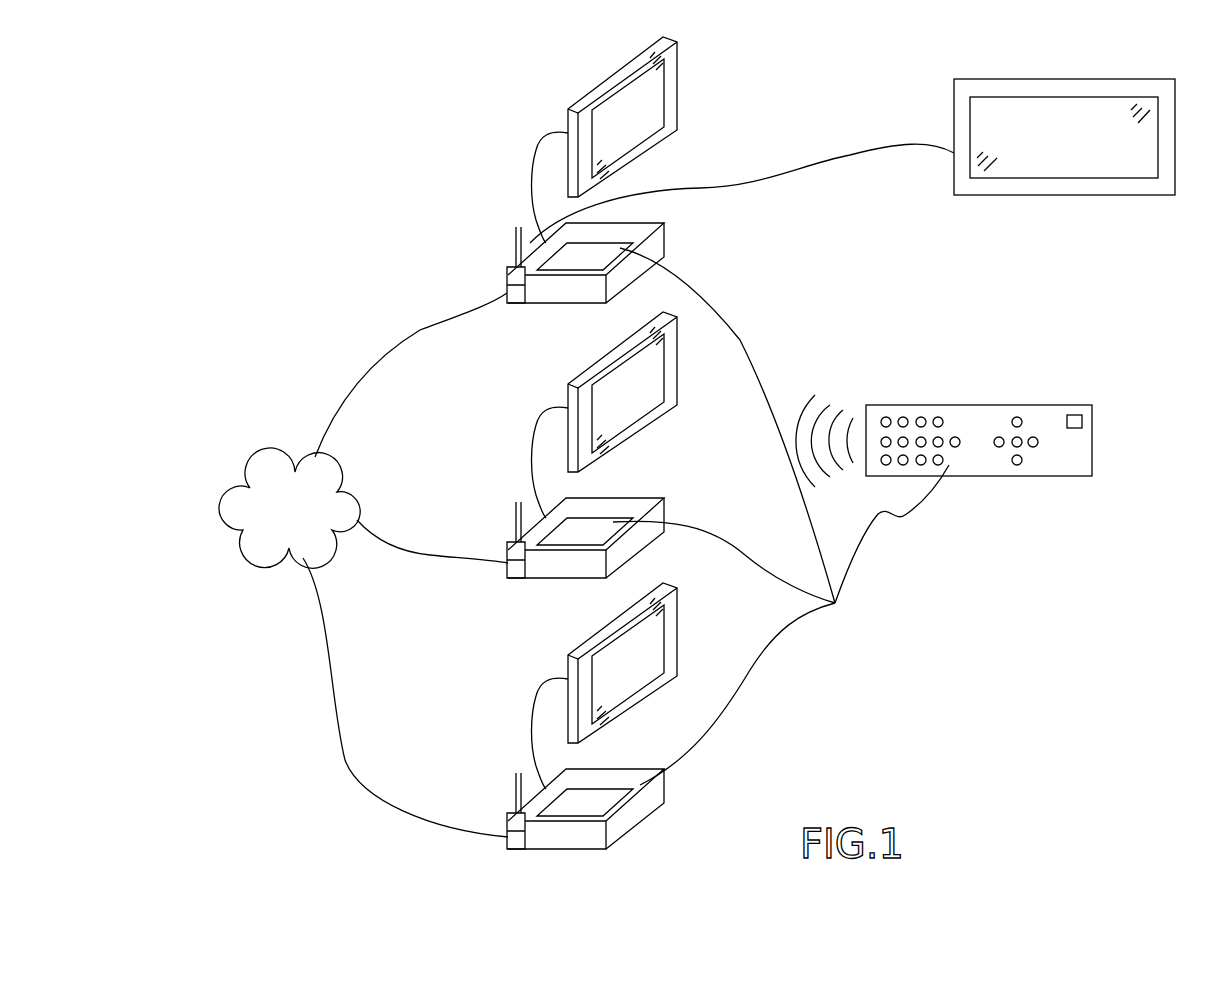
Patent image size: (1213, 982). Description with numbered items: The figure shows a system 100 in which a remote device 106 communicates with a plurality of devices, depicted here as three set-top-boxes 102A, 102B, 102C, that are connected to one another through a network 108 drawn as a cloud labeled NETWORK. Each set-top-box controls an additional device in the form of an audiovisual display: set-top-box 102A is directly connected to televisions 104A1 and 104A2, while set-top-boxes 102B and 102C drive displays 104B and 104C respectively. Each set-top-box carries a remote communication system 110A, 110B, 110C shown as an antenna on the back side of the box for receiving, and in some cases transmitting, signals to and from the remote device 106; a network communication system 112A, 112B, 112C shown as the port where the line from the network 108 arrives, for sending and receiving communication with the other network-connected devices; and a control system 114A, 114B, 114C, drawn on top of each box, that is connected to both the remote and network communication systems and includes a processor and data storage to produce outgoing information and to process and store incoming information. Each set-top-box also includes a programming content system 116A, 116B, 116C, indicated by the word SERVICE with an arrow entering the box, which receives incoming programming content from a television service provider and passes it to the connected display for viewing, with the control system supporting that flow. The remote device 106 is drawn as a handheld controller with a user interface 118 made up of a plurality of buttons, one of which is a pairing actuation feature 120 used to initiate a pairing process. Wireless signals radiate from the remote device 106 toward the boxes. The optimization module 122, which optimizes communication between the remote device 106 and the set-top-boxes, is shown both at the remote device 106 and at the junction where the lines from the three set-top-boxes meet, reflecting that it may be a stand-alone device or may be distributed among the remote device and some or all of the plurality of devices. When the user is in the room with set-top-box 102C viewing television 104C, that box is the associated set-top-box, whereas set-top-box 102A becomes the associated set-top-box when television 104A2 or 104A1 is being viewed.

The system 100 is at (1100, 730).
The set-top-box 102A is at (623, 283).
The set-top-box 102B is at (623, 558).
The set-top-box 102C is at (623, 829).
The television 104A1 is at (657, 135).
The television 104A2 is at (1083, 195).
The display device 104B is at (657, 410).
The television 104C is at (657, 681).
The remote device 106 is at (970, 491).
The network 108 is at (242, 481).
The remote communication system 110A is at (518, 227).
The remote communication system 110B is at (518, 502).
The remote communication system 110C is at (518, 773).
The network communication system 112A is at (514, 299).
The network communication system 112B is at (514, 574).
The network communication system 112C is at (510, 843).
The control system 114A is at (585, 256).
The control system 114B is at (585, 531).
The control system 114C is at (585, 802).
The programming content system 116A is at (507, 278).
The programming content system 116B is at (507, 553).
The programming content system 116C is at (507, 824).
The user interface 118 is at (905, 420).
The pairing actuation feature 120 is at (1075, 415).
The optimization module 122 is at (1080, 453).